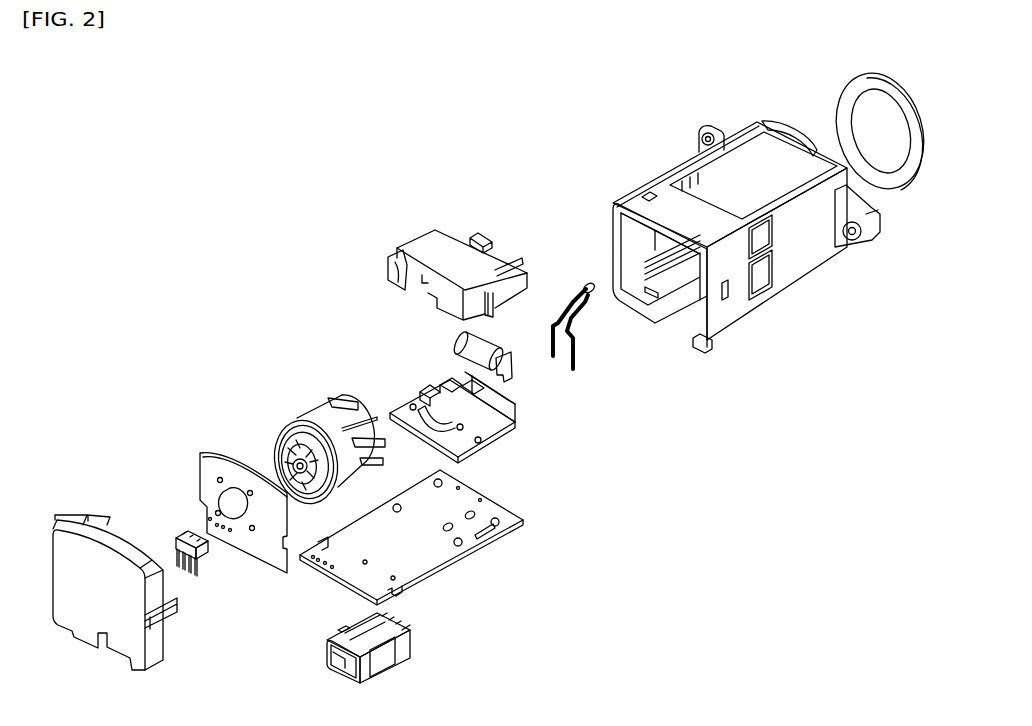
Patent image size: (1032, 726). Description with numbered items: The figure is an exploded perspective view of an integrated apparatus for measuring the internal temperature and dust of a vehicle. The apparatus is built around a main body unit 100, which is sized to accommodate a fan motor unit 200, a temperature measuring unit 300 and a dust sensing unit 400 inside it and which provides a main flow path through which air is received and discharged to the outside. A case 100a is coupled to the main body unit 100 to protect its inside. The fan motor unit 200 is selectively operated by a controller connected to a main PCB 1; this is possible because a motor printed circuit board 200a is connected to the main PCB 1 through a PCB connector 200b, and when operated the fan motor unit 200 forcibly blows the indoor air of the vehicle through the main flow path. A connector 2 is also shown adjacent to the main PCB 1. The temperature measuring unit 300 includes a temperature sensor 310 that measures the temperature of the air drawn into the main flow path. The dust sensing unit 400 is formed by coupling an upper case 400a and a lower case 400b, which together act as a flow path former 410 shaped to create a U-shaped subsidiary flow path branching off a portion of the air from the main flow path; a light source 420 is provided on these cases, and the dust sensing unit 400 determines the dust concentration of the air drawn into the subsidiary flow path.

The main PCB 1 is at (435, 560).
The connector 2 is at (330, 642).
The main body unit 100 is at (788, 280).
The case 100a is at (95, 532).
The fan motor unit 200 is at (305, 417).
The motor printed circuit board 200a is at (238, 457).
The PCB connector 200b is at (178, 533).
The temperature measuring unit 300 is at (625, 315).
The temperature sensor 310 is at (592, 285).
The dust sensing unit 400 is at (461, 316).
The upper case 400a is at (452, 250).
The lower case 400b is at (513, 417).
The flow path former 410 is at (517, 316).
The light source 420 is at (457, 337).